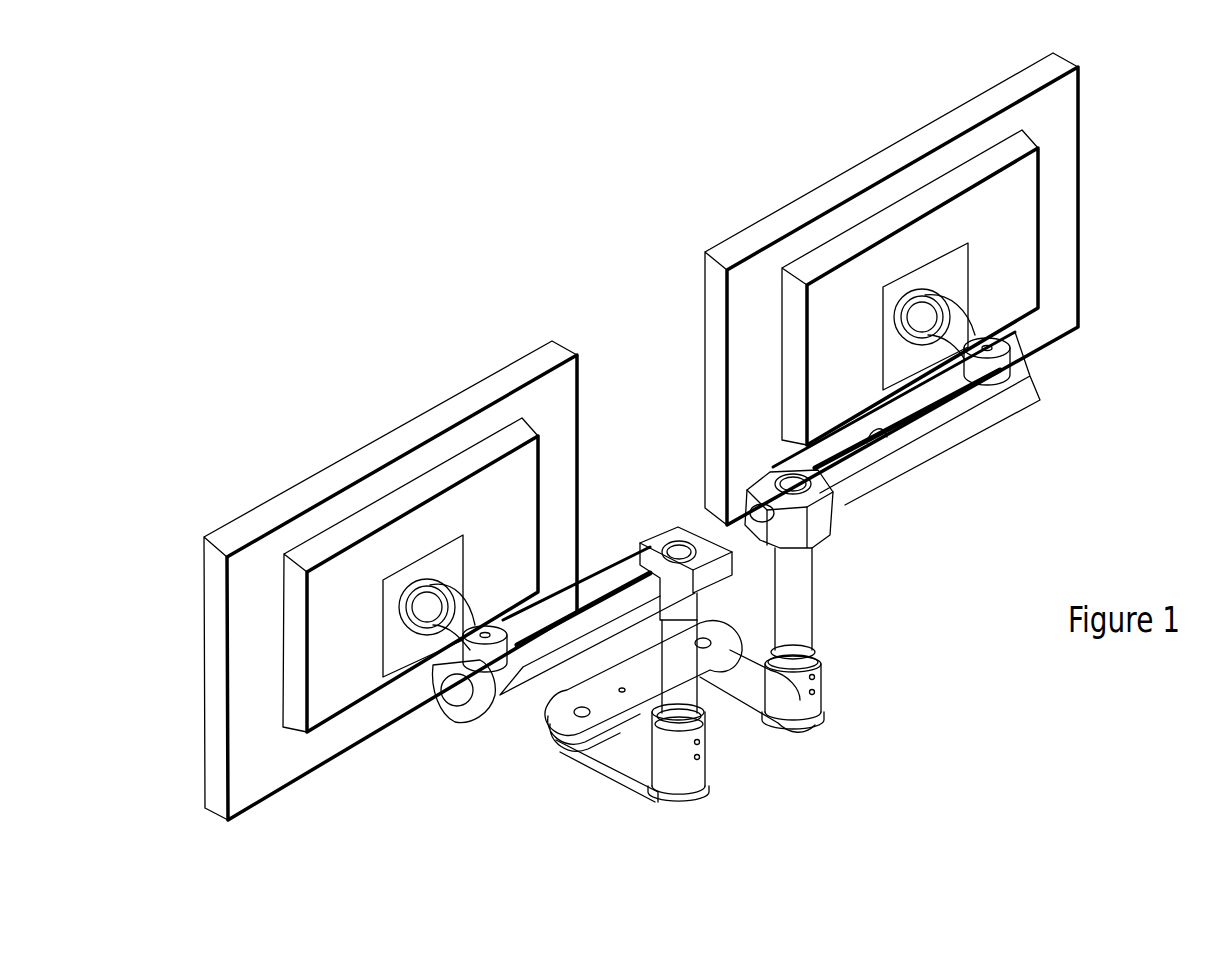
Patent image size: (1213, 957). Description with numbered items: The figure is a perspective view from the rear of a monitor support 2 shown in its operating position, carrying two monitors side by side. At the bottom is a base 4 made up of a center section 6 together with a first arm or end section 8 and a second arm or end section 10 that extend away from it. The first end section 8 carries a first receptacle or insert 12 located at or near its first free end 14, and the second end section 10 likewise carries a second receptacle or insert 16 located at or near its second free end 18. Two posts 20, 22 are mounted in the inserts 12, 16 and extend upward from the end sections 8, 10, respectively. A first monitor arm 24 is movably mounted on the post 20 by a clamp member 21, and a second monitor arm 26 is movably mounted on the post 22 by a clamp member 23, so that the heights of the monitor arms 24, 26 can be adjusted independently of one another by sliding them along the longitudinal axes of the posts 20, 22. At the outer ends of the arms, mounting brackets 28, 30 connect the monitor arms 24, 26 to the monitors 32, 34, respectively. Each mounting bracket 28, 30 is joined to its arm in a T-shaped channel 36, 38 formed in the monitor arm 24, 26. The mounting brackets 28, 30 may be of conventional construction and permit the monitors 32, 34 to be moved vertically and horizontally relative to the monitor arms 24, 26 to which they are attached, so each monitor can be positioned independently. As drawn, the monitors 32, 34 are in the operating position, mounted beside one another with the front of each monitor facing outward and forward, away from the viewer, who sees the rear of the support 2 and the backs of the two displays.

The monitor support 2 is at (954, 538).
The base 4 is at (563, 762).
The center section 6 is at (630, 667).
The first arm or end section 8 is at (623, 760).
The second arm or end section 10 is at (757, 700).
The first receptacle or insert 12 is at (672, 772).
The first free end 14 is at (700, 790).
The second receptacle or insert 16 is at (797, 707).
The second free end 18 is at (823, 720).
The post 20 is at (683, 638).
The clamp member 21 is at (665, 533).
The post 22 is at (803, 612).
The clamp member 23 is at (752, 486).
The monitor arm 24 is at (507, 690).
The monitor arm 26 is at (940, 440).
The mounting bracket 28 is at (473, 673).
The mounting bracket 30 is at (1036, 308).
The monitor 32 is at (333, 753).
The monitor 34 is at (1050, 332).
The T-shaped channel 36 is at (556, 622).
The T-shaped channel 38 is at (892, 443).